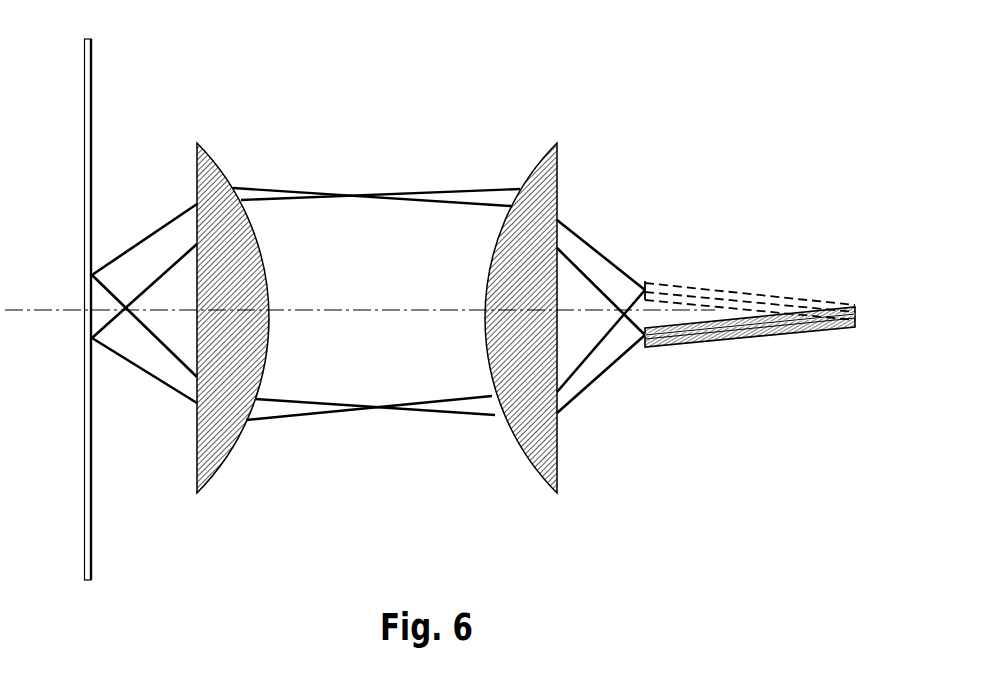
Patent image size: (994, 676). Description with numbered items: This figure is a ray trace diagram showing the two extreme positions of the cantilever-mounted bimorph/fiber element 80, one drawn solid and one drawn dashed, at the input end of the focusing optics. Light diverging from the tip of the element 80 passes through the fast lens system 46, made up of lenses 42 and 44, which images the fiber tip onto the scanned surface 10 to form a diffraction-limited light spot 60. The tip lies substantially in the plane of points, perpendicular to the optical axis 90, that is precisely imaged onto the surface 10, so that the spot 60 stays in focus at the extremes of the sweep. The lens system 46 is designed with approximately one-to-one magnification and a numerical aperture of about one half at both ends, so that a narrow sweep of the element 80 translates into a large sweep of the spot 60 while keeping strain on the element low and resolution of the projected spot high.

The scanned surface 10 is at (93, 76).
The lens 42 is at (246, 378).
The lens 44 is at (541, 381).
The lens system 46 is at (341, 489).
The light spot 60 is at (95, 274).
The bimorph/fiber element 80 is at (821, 247).
The optical axis 90 is at (291, 311).